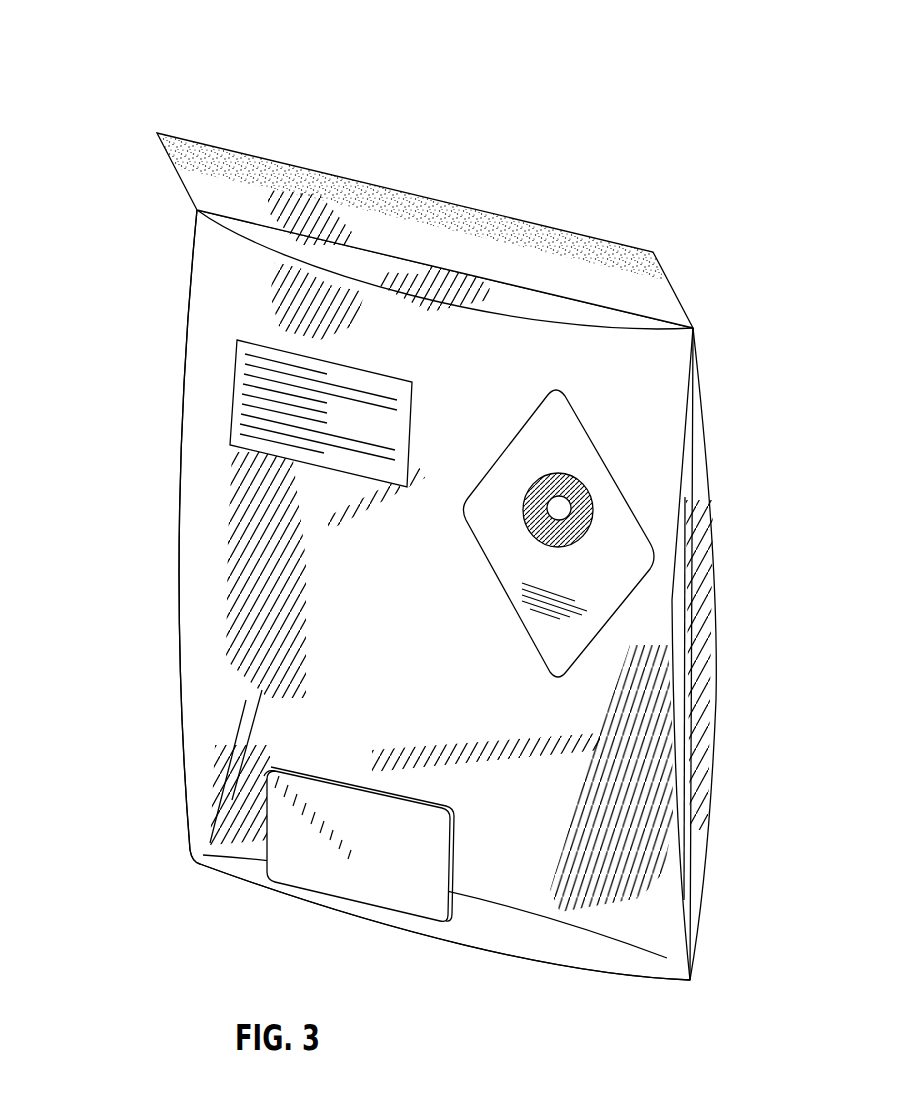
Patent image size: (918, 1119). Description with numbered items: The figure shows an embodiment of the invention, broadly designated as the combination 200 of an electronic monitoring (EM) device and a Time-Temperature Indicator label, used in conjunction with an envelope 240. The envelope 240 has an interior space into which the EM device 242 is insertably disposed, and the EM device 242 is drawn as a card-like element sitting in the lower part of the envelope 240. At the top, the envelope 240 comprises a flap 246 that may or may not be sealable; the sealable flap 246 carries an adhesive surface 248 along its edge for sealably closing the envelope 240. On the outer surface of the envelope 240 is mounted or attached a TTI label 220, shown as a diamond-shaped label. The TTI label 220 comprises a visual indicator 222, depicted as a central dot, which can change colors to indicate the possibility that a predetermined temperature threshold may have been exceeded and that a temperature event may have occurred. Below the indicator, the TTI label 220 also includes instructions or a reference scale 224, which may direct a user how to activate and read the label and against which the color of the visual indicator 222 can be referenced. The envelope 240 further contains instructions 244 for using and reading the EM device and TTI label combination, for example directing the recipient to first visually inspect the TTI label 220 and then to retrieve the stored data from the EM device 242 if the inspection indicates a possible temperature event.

The combination of EM device and TTI label 200 is at (118, 86).
The TTI label 220 is at (624, 468).
The visual indicator 222 is at (542, 470).
The reference scale 224 is at (588, 614).
The envelope 240 is at (178, 676).
The EM device 242 is at (335, 874).
The instructions 244 is at (232, 402).
The flap 246 is at (208, 190).
The adhesive surface 248 is at (276, 168).